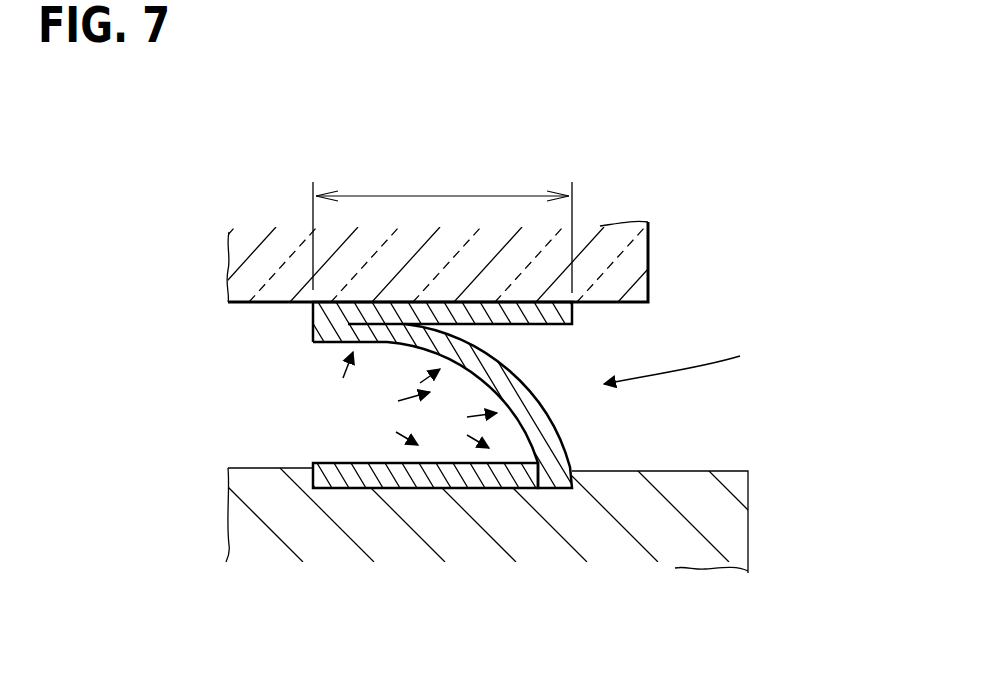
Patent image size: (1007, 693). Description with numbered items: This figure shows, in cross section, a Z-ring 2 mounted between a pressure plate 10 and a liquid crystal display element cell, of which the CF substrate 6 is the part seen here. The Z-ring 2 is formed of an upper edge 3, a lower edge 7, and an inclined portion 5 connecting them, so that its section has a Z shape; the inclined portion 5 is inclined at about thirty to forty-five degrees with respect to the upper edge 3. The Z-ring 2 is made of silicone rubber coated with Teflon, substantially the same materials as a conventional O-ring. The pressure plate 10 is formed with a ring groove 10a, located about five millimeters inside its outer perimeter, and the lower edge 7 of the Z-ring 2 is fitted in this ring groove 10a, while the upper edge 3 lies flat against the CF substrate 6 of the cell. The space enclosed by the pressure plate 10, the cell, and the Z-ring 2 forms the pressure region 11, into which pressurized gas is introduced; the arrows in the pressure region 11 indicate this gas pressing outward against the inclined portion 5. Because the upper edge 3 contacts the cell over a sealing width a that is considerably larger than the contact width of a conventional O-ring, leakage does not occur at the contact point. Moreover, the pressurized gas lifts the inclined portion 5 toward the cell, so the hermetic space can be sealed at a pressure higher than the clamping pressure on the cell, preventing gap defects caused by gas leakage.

The Z-ring 2 is at (685, 357).
The upper edge 3 is at (557, 313).
The inclined portion 5 is at (545, 433).
The CF substrate 6 is at (628, 254).
The lower edge 7 is at (472, 480).
The pressure plate 10 is at (707, 505).
The ring groove 10a is at (314, 476).
The pressure region 11 is at (325, 402).
The sealing width a is at (442, 222).